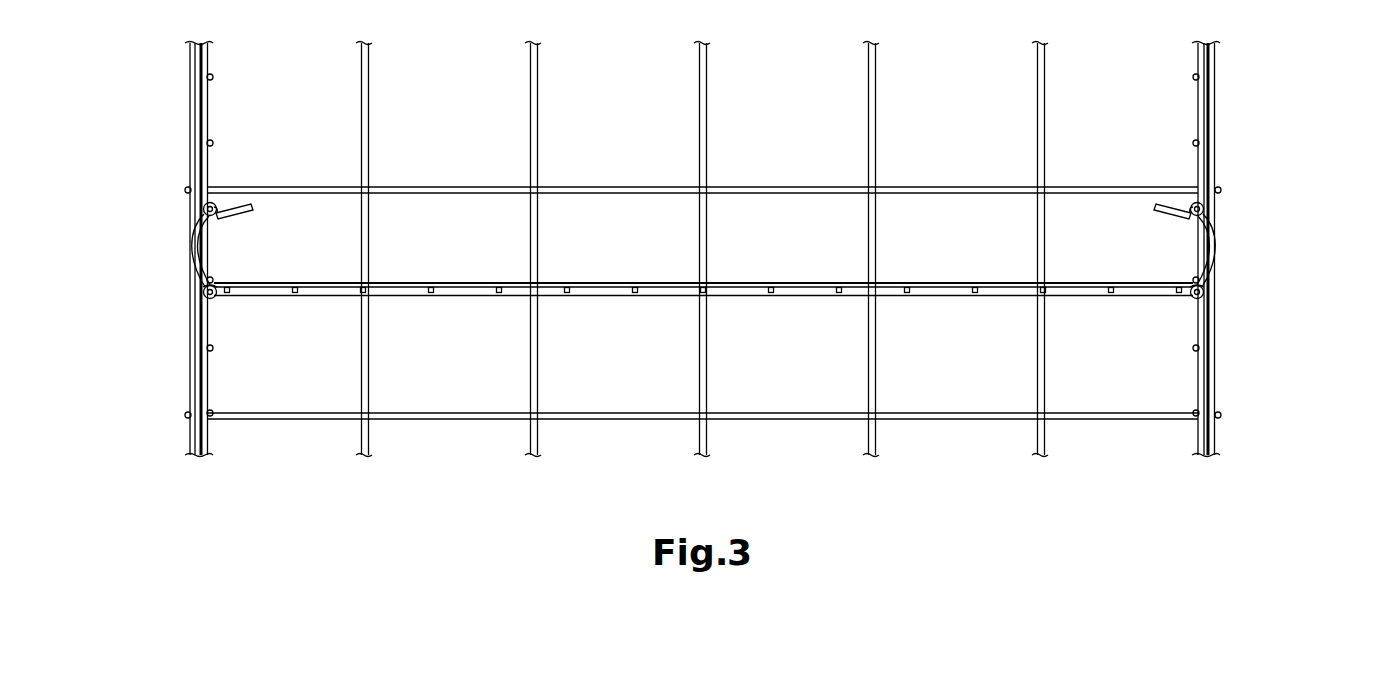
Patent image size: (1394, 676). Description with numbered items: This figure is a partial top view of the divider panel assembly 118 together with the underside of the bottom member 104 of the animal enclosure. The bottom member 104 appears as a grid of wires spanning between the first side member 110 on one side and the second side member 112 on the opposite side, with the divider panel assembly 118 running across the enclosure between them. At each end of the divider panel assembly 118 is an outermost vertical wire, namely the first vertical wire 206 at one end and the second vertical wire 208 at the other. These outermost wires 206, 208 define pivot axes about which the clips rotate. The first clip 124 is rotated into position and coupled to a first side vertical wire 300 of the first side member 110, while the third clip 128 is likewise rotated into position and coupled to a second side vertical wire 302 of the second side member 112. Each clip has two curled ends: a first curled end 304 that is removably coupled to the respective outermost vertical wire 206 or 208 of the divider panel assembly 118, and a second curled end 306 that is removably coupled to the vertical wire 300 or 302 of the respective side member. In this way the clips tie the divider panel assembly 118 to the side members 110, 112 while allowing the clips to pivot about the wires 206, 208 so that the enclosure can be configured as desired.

The bottom member 104 is at (787, 187).
The first side member 110 is at (1197, 117).
The second side member 112 is at (210, 117).
The divider panel assembly 118 is at (612, 283).
The first clip 124 is at (1220, 233).
The third clip 128 is at (188, 238).
The first vertical wire 206 is at (202, 292).
The second vertical wire 208 is at (1205, 292).
The first side vertical wire 300 is at (1203, 211).
The second side vertical wire 302 is at (205, 212).
The first curled end 304 is at (222, 308).
The second curled end 306 is at (216, 230).